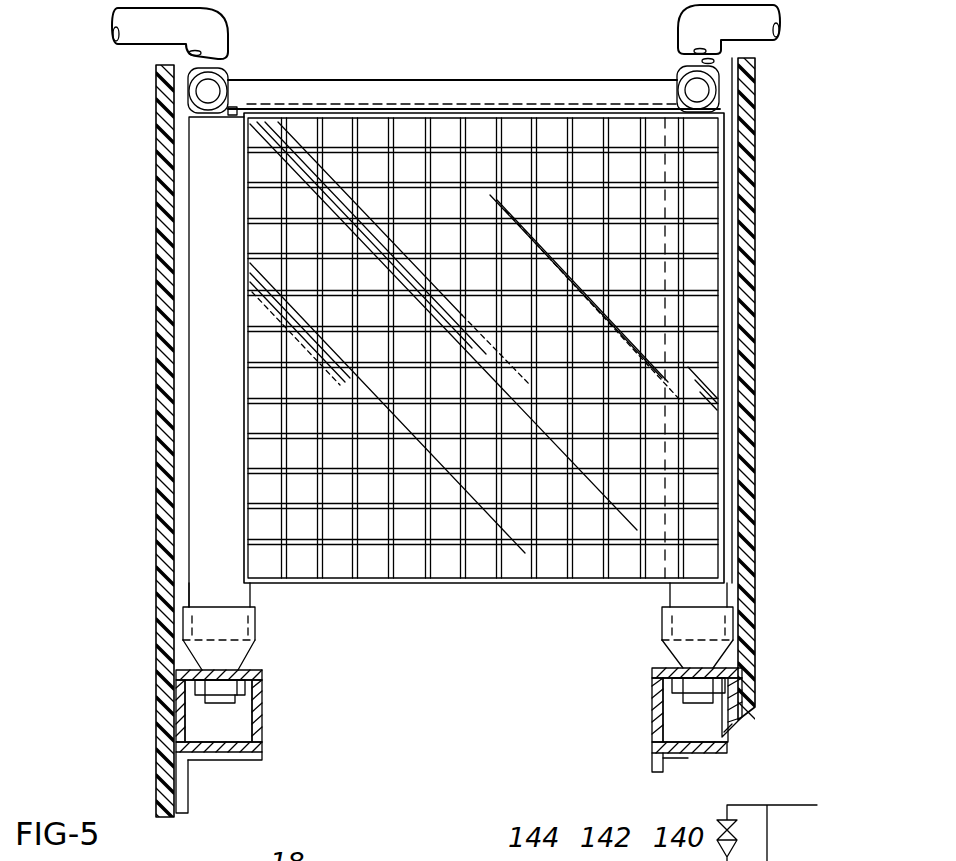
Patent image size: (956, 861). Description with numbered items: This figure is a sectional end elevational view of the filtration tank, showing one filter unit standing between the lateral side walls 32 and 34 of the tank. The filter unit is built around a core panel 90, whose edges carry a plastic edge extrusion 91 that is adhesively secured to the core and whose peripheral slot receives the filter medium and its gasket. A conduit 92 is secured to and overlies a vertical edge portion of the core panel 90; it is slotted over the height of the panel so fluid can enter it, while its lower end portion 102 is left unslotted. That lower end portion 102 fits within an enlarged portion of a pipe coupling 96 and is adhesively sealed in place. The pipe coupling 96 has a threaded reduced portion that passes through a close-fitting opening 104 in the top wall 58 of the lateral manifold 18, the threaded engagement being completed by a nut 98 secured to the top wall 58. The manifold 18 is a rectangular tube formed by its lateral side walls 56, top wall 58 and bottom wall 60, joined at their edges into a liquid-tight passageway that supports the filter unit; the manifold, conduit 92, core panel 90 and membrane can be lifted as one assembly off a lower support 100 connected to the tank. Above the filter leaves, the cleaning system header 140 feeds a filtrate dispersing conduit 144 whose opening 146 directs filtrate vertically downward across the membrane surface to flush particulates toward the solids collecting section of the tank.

The lateral manifold 18 is at (240, 720).
The lateral side wall 32 is at (158, 430).
The lateral side wall 34 is at (757, 352).
The lateral side walls 56 is at (262, 731).
The top wall 58 is at (240, 672).
The bottom wall 60 is at (237, 760).
The core panel 90 is at (443, 530).
The edge extrusion 91 is at (722, 175).
The conduit 92 is at (203, 298).
The pipe coupling 96 is at (255, 622).
The nut 98 is at (248, 687).
The lower support 100 is at (190, 800).
The lower end portion 102 is at (200, 593).
The opening 104 is at (237, 673).
The cleaning system header 140 is at (210, 90).
The filtrate dispersing conduit 144 is at (409, 84).
The opening 146 is at (556, 104).